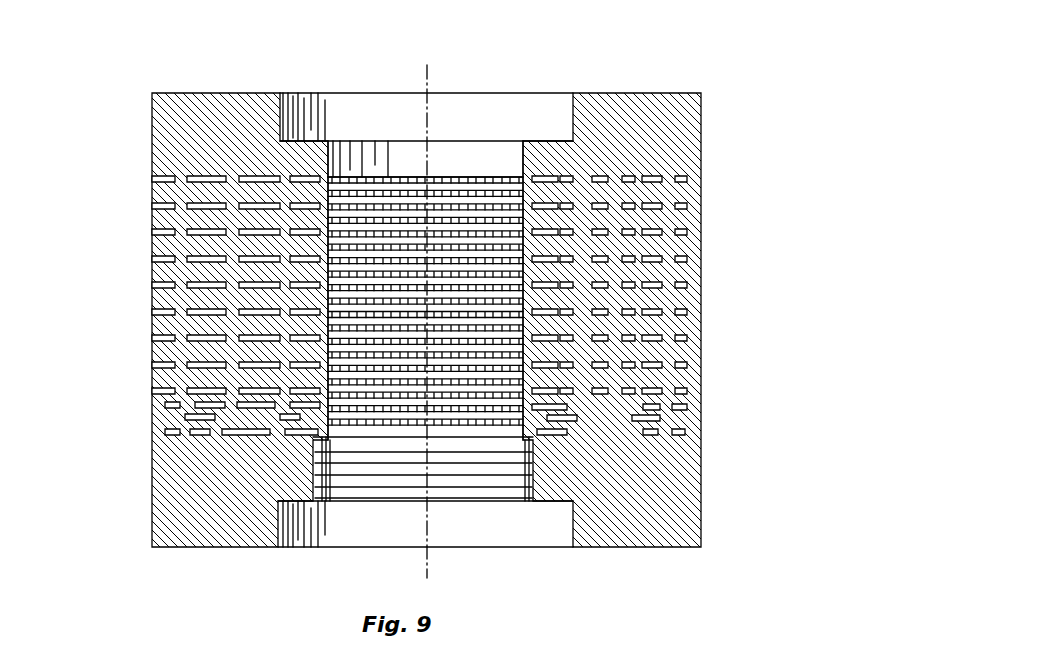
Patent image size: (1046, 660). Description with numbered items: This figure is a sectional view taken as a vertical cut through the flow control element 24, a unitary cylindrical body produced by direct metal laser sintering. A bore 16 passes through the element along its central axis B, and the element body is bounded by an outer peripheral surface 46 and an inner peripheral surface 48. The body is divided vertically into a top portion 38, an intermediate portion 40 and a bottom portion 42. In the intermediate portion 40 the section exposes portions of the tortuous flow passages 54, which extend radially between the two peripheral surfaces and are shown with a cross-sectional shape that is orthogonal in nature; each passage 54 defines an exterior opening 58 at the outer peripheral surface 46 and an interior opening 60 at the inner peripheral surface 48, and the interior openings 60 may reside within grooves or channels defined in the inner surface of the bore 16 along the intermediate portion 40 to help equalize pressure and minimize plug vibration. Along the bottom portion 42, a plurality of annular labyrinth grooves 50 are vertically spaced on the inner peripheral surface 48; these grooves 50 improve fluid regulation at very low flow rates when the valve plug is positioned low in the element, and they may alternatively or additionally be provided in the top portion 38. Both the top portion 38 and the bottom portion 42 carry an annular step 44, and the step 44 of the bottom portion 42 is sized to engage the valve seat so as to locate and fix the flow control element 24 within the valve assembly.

The flow control element 24 is at (722, 72).
The bore 16 is at (341, 165).
The interior opening 60 is at (338, 173).
The central axis B is at (427, 82).
The inner peripheral surface 48 is at (523, 160).
The annular step 44 is at (548, 137).
The outer peripheral surface 46 is at (701, 136).
The tortuous flow passages 54 is at (647, 262).
The exterior opening 58 is at (152, 390).
The top portion 38 is at (68, 93).
The intermediate portion 40 is at (68, 173).
The bottom portion 42 is at (68, 436).
The labyrinth grooves 50 is at (527, 478).